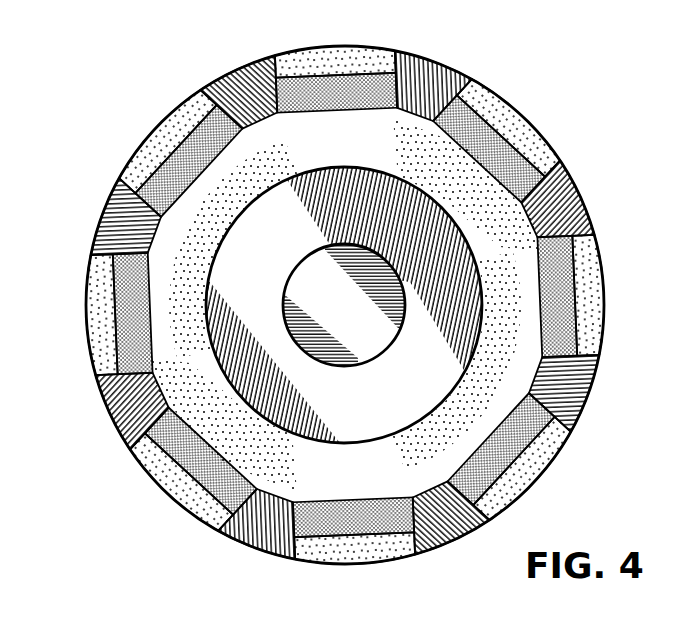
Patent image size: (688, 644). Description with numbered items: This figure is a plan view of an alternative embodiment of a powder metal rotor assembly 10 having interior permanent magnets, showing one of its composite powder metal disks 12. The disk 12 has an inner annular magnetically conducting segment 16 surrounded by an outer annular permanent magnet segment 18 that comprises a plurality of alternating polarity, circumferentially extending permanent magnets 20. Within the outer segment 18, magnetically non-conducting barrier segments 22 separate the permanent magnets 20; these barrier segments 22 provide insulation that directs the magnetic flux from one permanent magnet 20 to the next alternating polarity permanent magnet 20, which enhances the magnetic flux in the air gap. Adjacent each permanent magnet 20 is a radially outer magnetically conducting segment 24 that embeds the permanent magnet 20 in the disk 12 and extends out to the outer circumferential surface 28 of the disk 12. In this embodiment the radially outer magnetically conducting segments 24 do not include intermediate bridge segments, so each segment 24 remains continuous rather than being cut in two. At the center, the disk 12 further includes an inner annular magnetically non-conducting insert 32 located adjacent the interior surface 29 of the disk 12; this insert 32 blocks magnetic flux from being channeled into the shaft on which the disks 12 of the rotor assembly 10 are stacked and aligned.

The powder metal rotor assembly 10 is at (120, 84).
The powder metal composite disk 12 is at (455, 74).
The inner annular magnetically conducting segment 16 is at (261, 186).
The outer annular permanent magnet segment 18 is at (570, 389).
The permanent magnet 20 is at (483, 97).
The magnetically non-conducting barrier segment 22 is at (570, 200).
The radially outer magnetically conducting segment 24 is at (336, 60).
The outer circumferential surface 28 is at (540, 142).
The interior surface 29 is at (375, 349).
The inner annular magnetically non-conducting insert 32 is at (289, 253).